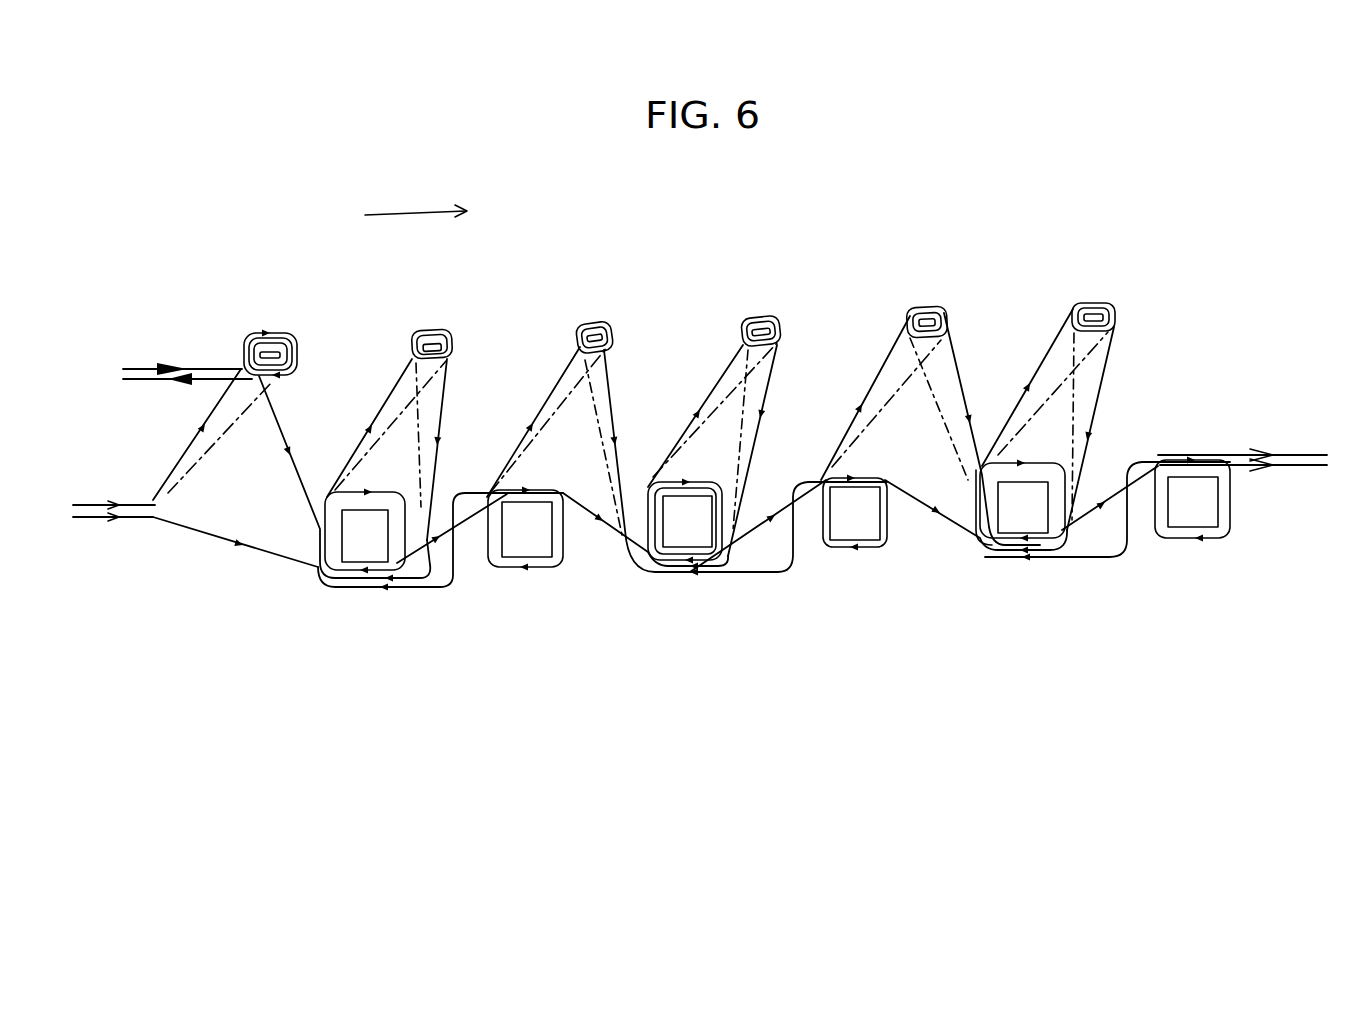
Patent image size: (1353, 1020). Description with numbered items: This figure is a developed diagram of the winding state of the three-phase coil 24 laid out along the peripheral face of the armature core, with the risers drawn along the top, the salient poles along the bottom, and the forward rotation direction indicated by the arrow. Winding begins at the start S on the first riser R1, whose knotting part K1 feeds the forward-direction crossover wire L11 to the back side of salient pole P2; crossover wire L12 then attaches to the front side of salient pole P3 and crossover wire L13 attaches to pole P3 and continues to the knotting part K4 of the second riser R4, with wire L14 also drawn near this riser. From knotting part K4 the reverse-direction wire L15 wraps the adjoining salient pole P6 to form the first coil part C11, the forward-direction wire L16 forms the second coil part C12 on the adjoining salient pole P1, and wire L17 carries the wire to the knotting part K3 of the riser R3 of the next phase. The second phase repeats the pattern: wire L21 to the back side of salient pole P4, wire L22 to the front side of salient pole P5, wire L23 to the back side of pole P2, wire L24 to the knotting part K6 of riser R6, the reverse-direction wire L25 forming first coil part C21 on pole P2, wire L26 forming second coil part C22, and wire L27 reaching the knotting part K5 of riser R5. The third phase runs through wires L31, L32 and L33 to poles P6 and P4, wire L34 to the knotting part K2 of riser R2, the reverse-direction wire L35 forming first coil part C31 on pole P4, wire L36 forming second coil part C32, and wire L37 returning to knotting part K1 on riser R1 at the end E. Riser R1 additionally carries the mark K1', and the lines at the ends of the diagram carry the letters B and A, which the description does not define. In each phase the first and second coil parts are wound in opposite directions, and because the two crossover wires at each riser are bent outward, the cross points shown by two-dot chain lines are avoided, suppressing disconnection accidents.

The three-phase coil 24 is at (191, 240).
The winding start S is at (179, 355).
The winding end E is at (184, 401).
The belt line B is at (699, 463).
The belt line A is at (699, 511).
The first riser R1 is at (270, 333).
The outer belt loop on roller R1 K1' is at (297, 327).
The knotting part K1 is at (306, 350).
The second riser R6 is at (431, 319).
The knotting part K6 is at (452, 341).
The first riser R5 is at (594, 314).
The knotting part K5 is at (608, 322).
The second riser R4 is at (760, 307).
The knotting part K4 is at (778, 327).
The first riser R3 is at (927, 299).
The knotting part K3 is at (946, 317).
The second riser R2 is at (1093, 293).
The knotting part K2 is at (1115, 313).
The salient pole P1 is at (855, 513).
The salient pole P2 is at (365, 531).
The salient pole P3 is at (525, 529).
The salient pole P4 is at (1020, 503).
The salient pole P5 is at (1192, 499).
The salient pole P6 is at (685, 521).
The crossover wire L11 is at (278, 417).
The crossover wire L12 is at (457, 493).
The crossover wire L13 is at (601, 527).
The crossover wire L14 is at (758, 424).
The crossover wire L15 is at (722, 374).
The crossover wire L16 is at (768, 529).
The crossover wire L17 is at (878, 387).
The crossover wire L21 is at (950, 371).
The crossover wire L22 is at (1097, 508).
The crossover wire L23 is at (226, 541).
The crossover wire L24 is at (442, 404).
The crossover wire L25 is at (383, 405).
The crossover wire L26 is at (453, 588).
The crossover wire L27 is at (553, 388).
The crossover wire L31 is at (613, 414).
The crossover wire L32 is at (760, 573).
The crossover wire L33 is at (925, 505).
The crossover wire L34 is at (1098, 391).
The crossover wire L35 is at (1055, 361).
The crossover wire L36 is at (1100, 557).
The crossover wire L37 is at (182, 455).
The first coil part C11 is at (677, 573).
The second coil part C12 is at (870, 549).
The first coil part C21 is at (349, 574).
The second coil part C22 is at (524, 572).
The first coil part C31 is at (1010, 558).
The second coil part C32 is at (1192, 540).